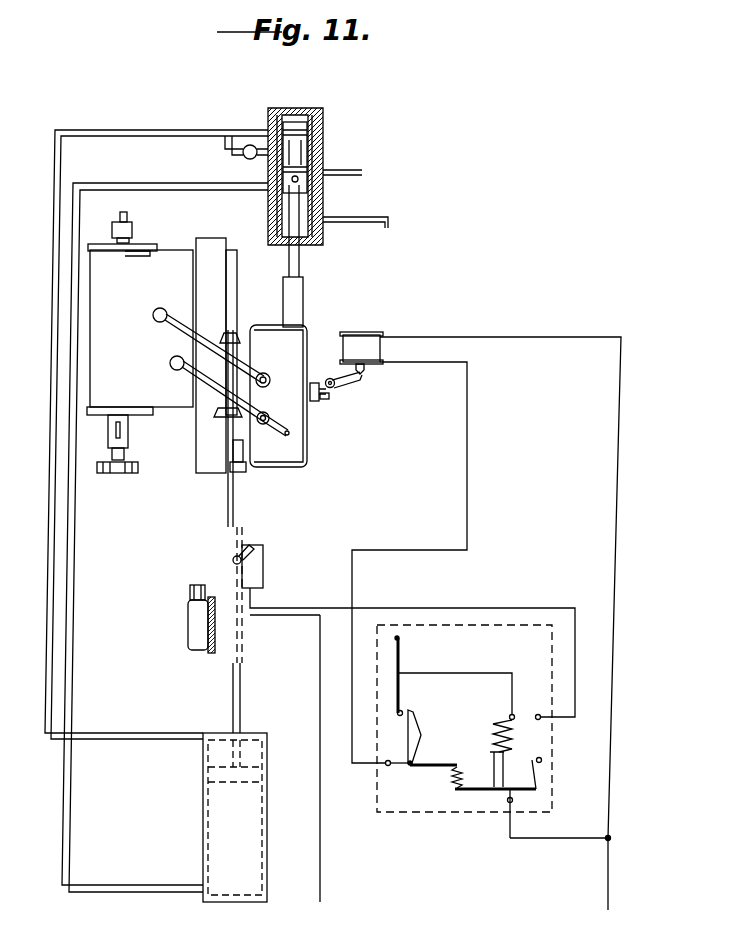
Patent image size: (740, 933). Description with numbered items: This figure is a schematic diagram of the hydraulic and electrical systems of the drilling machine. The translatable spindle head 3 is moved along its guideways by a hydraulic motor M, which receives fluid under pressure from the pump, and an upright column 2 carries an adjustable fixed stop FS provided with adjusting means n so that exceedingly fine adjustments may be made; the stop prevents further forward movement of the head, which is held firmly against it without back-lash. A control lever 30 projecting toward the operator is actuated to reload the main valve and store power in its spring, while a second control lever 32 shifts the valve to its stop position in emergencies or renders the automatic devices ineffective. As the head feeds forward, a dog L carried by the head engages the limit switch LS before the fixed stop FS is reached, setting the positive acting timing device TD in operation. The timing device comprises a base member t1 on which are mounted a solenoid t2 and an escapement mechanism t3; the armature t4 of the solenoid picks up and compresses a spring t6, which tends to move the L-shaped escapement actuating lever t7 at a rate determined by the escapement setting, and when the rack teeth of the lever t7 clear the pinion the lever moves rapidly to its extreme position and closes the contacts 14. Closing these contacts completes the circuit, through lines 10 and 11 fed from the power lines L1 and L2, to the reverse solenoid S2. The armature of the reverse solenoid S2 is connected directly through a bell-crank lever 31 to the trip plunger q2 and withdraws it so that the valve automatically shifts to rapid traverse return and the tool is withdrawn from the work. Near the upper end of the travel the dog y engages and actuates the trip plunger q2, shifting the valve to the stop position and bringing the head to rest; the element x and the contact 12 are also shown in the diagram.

The spindle head 3 is at (140, 342).
The column x is at (222, 337).
The dog y is at (213, 409).
The dog L is at (247, 443).
The second control lever 32 is at (152, 316).
The control lever 30 is at (173, 368).
The pivot q2 is at (258, 392).
The reverse solenoid S2 is at (371, 333).
The bell-crank lever 31 is at (350, 385).
The limit switch LS is at (237, 549).
The fixed stop FS is at (188, 628).
The adjusting means n is at (190, 588).
The upright column 2 is at (208, 652).
The line 11 is at (352, 658).
The line 10 is at (460, 672).
The power line L1 is at (317, 880).
The power line L2 is at (607, 897).
The timing device TD is at (430, 813).
The contacts 14 is at (399, 715).
The base member t1 is at (552, 747).
The solenoid t2 is at (509, 734).
The escapement mechanism t3 is at (415, 758).
The armature t4 is at (492, 765).
The spring t6 is at (455, 780).
The escapement actuating lever t7 is at (420, 767).
The contact 12 is at (507, 800).
The hydraulic motor M is at (267, 825).